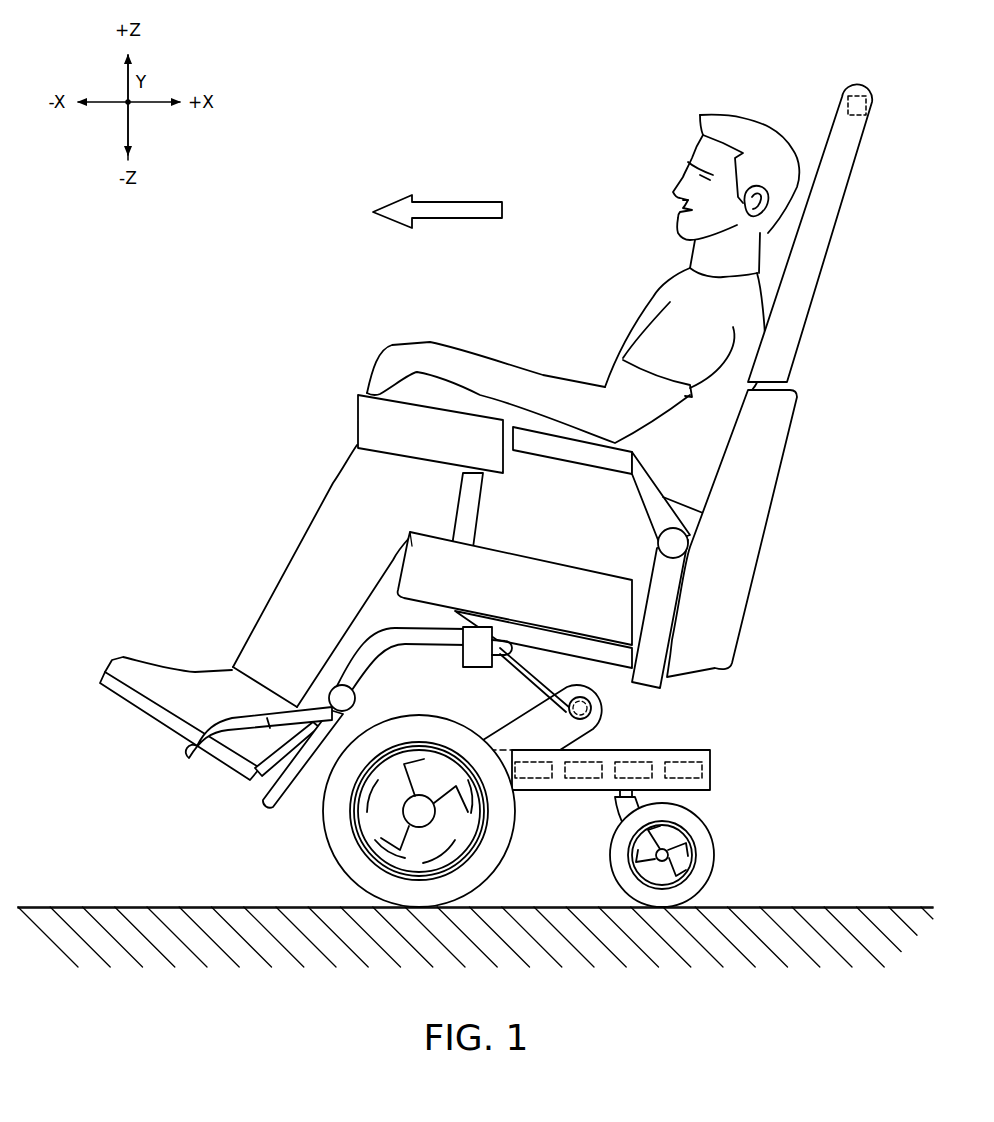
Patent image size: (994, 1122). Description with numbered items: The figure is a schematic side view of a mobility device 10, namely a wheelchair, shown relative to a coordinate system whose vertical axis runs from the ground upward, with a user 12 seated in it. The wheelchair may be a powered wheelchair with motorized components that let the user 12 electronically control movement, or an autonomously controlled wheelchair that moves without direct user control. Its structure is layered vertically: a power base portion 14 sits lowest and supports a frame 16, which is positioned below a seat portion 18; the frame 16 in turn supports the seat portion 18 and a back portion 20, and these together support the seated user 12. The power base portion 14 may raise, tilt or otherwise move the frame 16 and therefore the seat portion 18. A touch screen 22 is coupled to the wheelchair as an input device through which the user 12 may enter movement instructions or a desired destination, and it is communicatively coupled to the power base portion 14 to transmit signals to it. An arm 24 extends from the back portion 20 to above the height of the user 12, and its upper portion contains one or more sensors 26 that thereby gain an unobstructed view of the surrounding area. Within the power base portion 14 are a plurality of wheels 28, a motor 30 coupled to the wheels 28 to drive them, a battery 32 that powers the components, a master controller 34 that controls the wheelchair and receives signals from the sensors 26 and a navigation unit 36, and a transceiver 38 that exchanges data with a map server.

The mobility device 10 is at (249, 401).
The user 12 is at (612, 206).
The power base portion 14 is at (712, 775).
The frame 16 is at (512, 636).
The seat portion 18 is at (414, 563).
The back portion 20 is at (757, 495).
The touch screen 22 is at (370, 415).
The arm 24 is at (835, 250).
The sensors 26 is at (858, 93).
The wheels 28 is at (335, 838).
The motor 30 is at (478, 752).
The battery 32 is at (686, 760).
The master controller 34 is at (531, 780).
The navigation unit 36 is at (582, 780).
The transceiver 38 is at (636, 760).